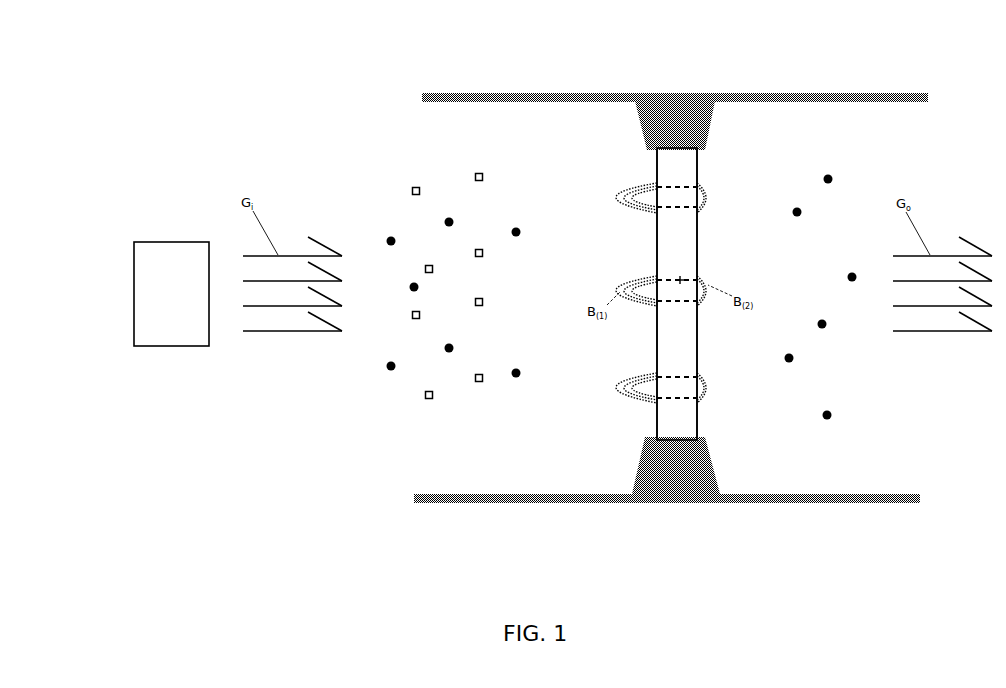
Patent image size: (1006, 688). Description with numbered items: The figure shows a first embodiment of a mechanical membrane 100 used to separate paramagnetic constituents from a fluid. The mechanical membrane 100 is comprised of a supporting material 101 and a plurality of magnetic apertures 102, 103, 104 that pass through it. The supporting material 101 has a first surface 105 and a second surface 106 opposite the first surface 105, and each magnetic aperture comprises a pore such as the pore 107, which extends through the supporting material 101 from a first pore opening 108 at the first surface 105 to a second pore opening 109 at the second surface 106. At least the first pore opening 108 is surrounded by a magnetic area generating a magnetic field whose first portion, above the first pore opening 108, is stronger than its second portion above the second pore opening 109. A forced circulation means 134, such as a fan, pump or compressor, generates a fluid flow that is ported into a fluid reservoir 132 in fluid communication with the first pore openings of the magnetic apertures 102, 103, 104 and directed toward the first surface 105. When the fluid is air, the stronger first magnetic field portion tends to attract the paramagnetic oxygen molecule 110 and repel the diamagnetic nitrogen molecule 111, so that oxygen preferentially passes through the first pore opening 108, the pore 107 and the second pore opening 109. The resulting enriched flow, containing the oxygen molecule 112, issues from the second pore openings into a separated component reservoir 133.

The mechanical membrane 100 is at (606, 163).
The supporting material 101 is at (670, 260).
The magnetic aperture 102 is at (611, 288).
The magnetic aperture 103 is at (611, 189).
The magnetic aperture 104 is at (611, 383).
The first surface 105 is at (657, 238).
The second surface 106 is at (697, 238).
The pore 107 is at (680, 276).
The first pore opening 108 is at (645, 289).
The second pore opening 109 is at (708, 293).
The O2 molecule 110 is at (513, 380).
The N2 molecule 111 is at (427, 402).
The O2 molecule 112 is at (788, 365).
The fluid reservoir 132 is at (505, 123).
The separated component reservoir 133 is at (813, 123).
The forced circulation means 134 is at (171, 294).